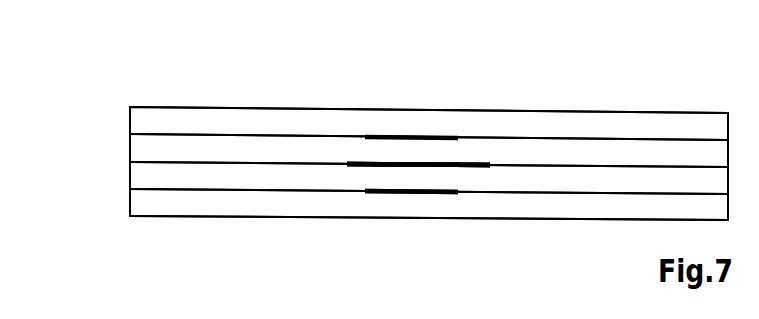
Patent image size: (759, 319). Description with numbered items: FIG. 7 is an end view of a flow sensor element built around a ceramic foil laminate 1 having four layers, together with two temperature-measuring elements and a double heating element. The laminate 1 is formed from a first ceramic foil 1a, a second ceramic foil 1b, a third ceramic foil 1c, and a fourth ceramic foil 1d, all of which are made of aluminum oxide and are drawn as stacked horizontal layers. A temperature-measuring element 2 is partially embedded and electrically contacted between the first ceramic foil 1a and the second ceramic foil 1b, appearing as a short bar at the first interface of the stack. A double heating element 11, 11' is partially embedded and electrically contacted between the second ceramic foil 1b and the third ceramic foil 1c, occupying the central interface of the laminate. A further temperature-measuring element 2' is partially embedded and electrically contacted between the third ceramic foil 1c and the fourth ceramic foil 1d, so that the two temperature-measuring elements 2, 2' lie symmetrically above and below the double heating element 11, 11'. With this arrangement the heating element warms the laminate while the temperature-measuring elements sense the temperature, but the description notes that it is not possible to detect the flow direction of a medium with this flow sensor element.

The ceramic foil laminate 1 is at (631, 112).
The first ceramic foil 1a is at (168, 123).
The second ceramic foil 1b is at (158, 150).
The third ceramic foil 1c is at (152, 180).
The fourth ceramic foil 1d is at (185, 200).
The temperature-measuring element 2 is at (411, 83).
The further temperature-measuring element 2' is at (410, 246).
The double heating element 11 is at (462, 231).
The double heating element 11' is at (418, 164).